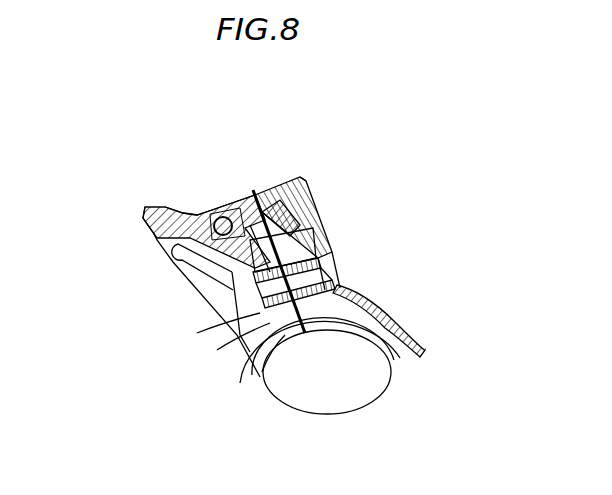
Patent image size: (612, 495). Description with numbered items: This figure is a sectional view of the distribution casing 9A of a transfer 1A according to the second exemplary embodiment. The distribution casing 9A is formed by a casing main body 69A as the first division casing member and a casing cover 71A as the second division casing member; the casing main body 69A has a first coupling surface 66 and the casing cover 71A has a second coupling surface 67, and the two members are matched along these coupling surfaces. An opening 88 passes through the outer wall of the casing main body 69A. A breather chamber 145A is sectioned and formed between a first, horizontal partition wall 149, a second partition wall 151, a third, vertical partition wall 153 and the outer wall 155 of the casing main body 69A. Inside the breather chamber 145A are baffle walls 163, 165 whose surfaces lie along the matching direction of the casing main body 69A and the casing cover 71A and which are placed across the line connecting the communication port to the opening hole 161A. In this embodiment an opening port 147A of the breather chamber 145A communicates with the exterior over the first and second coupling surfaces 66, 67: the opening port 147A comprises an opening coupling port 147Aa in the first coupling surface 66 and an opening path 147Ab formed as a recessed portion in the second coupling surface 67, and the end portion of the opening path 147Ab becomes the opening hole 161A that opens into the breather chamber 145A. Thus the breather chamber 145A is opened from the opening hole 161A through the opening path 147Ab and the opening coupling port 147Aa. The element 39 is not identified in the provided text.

The transfer 1A is at (370, 228).
The distribution casing 9A is at (200, 211).
The lever member 39 is at (187, 262).
The first coupling surface 66 is at (370, 383).
The second coupling surface 67 is at (262, 372).
The casing main body 69A is at (143, 217).
The casing cover 71A is at (305, 182).
The opening 88 is at (158, 237).
The breather chamber 145A is at (312, 226).
The opening port 147A is at (228, 209).
The opening coupling port 147Aa is at (236, 212).
The opening path 147Ab is at (257, 208).
The first partition wall 149 is at (217, 350).
The second partition wall 151 is at (363, 297).
The third partition wall 153 is at (243, 298).
The outer wall 155 is at (322, 213).
The opening hole 161A is at (283, 185).
The baffle wall 163 is at (197, 333).
The baffle wall 165 is at (323, 266).